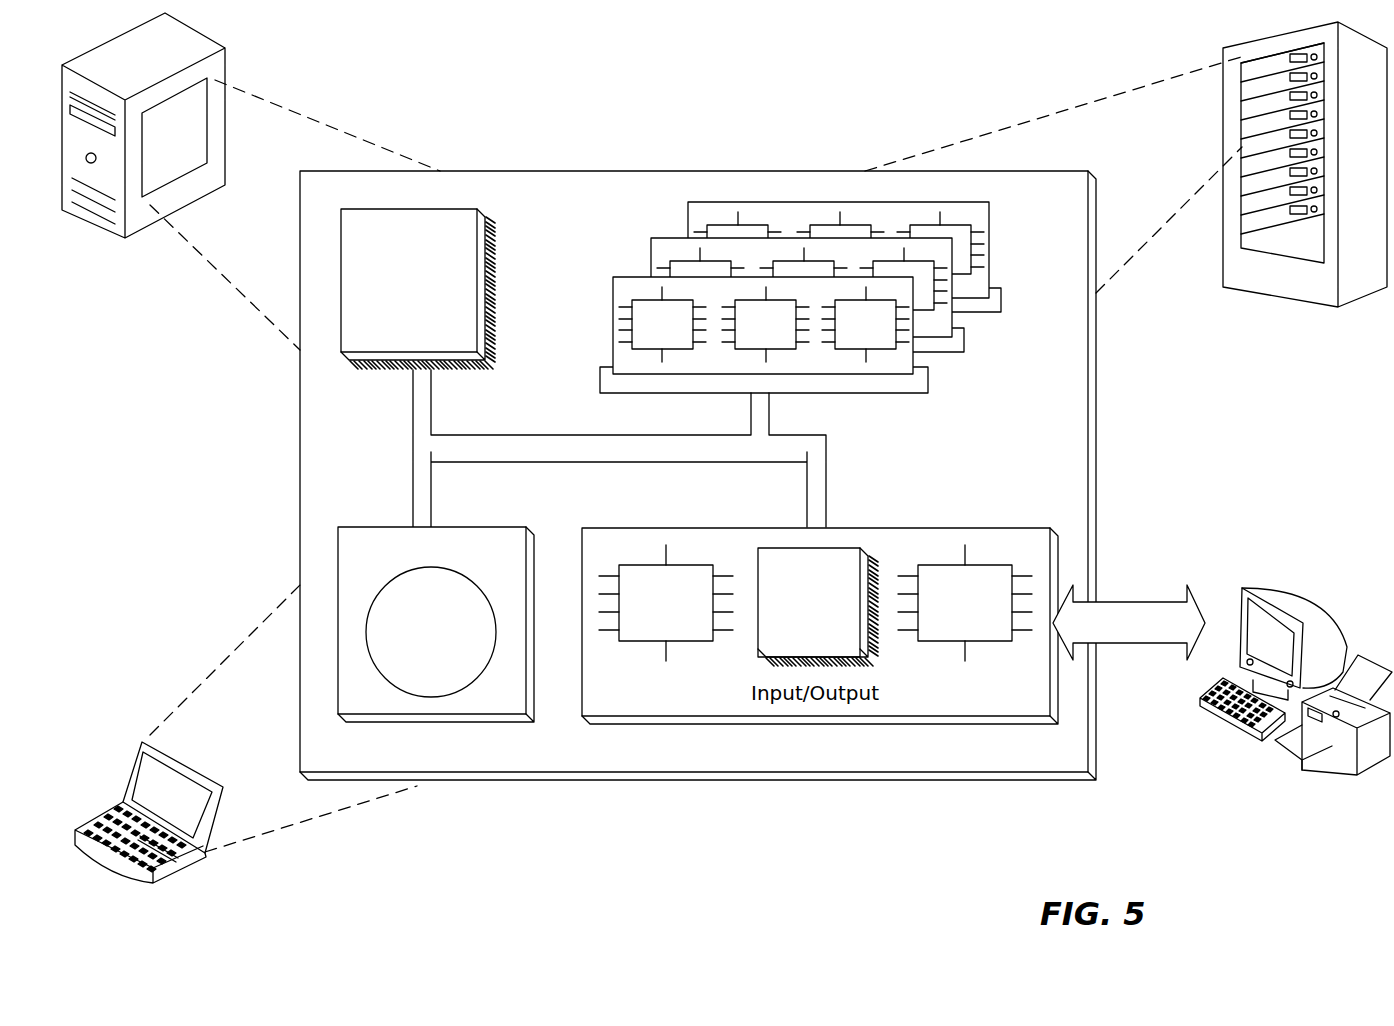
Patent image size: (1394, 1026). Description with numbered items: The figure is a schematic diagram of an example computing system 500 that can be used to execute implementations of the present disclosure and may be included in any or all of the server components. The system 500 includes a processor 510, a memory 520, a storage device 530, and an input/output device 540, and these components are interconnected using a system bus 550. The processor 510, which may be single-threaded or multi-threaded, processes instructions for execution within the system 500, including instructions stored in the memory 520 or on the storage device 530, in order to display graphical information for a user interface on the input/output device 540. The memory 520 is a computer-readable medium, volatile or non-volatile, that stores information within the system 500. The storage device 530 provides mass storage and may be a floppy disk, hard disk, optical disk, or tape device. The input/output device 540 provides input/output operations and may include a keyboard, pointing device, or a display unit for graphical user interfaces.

The computing system 500 is at (510, 84).
The processor 510 is at (418, 289).
The memory 520 is at (993, 352).
The storage device 530 is at (436, 624).
The input/output device 540 is at (1240, 596).
The system bus 550 is at (613, 453).